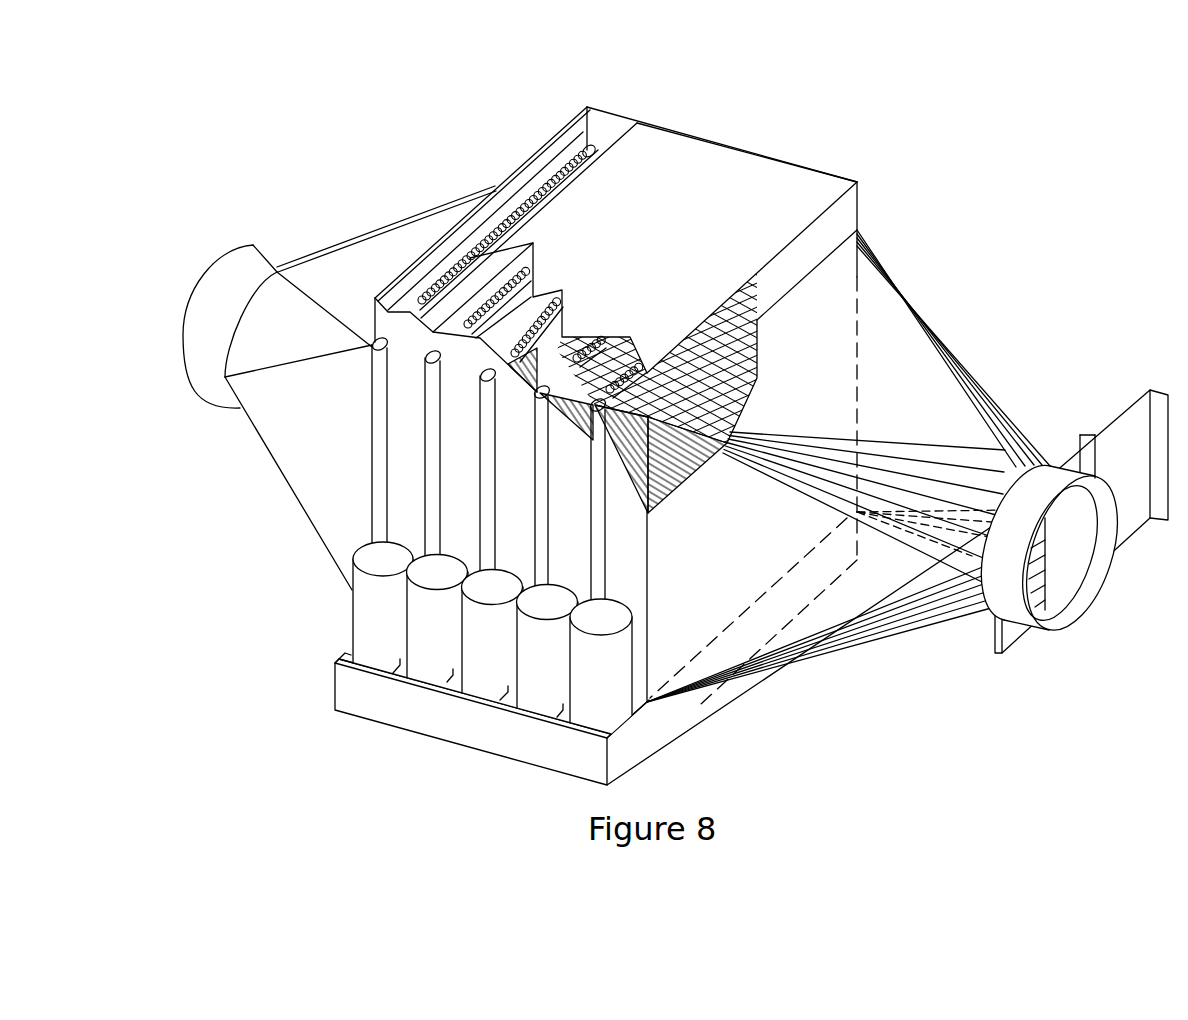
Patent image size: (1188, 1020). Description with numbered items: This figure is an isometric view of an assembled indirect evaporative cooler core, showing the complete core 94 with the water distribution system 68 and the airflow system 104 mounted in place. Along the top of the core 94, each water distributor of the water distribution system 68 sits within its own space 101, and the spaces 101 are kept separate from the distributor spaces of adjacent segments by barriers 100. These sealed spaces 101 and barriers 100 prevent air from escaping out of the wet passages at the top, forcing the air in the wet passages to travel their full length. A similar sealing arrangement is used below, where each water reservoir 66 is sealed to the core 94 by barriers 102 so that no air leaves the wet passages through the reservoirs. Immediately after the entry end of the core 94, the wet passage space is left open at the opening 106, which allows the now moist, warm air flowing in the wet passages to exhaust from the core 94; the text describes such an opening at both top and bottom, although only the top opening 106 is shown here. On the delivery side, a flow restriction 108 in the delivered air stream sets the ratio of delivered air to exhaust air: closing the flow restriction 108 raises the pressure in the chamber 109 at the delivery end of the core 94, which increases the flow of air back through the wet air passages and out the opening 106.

The water reservoir 66 is at (383, 695).
The water distribution system 68 is at (510, 287).
The core 94 is at (760, 335).
The barriers 100 is at (555, 308).
The space 101 is at (686, 434).
The barriers 102 is at (563, 712).
The airflow system 104 is at (315, 337).
The opening 106 is at (557, 162).
The flow restriction 108 is at (1073, 520).
The chamber 109 is at (882, 395).